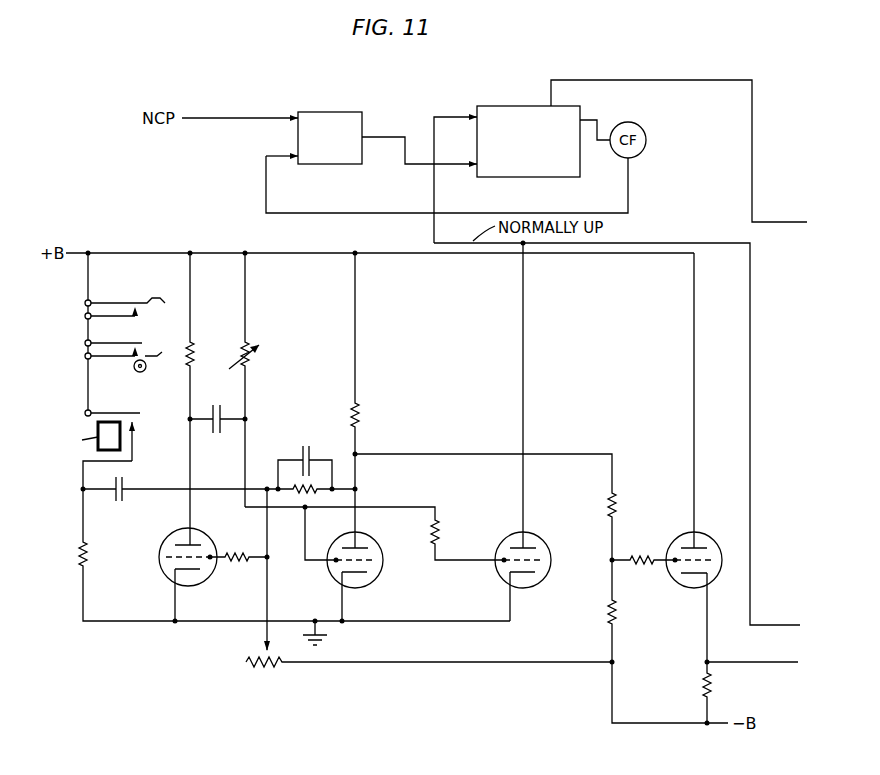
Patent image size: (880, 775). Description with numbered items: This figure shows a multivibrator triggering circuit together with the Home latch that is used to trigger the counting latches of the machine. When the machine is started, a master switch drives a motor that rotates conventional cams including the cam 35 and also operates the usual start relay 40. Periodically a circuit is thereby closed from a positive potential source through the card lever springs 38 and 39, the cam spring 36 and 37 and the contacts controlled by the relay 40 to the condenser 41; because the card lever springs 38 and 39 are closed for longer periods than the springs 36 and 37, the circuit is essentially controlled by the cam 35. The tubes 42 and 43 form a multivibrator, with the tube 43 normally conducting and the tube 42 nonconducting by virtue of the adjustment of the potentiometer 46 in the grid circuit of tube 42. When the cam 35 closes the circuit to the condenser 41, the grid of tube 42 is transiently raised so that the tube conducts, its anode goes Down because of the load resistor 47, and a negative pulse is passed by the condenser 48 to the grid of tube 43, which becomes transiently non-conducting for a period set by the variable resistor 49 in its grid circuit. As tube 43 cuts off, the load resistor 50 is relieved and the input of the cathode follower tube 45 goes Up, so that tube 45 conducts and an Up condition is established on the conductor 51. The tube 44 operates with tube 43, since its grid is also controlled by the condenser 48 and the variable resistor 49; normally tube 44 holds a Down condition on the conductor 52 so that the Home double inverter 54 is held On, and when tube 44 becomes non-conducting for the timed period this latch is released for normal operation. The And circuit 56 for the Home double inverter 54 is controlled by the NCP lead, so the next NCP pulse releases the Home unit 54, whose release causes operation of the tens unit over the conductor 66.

The cam 35 is at (146, 366).
The cam spring 36 is at (101, 359).
The cam spring 37 is at (100, 345).
The card lever spring 38 is at (126, 318).
The card lever spring 39 is at (114, 302).
The start relay 40 is at (108, 428).
The condenser 41 is at (124, 493).
The tube 42 is at (197, 541).
The tube 43 is at (365, 542).
The tube 44 is at (540, 542).
The cathode follower tube 45 is at (706, 542).
The potentiometer 46 is at (268, 676).
The load resistor 47 is at (197, 352).
The condenser 48 is at (224, 428).
The variable resistor 49 is at (258, 353).
The load resistor 50 is at (364, 413).
The conductor 51 is at (759, 666).
The conductor 52 is at (527, 297).
The Home double inverter 54 is at (497, 109).
The And circuit 56 is at (322, 112).
The conductor 66 is at (785, 221).